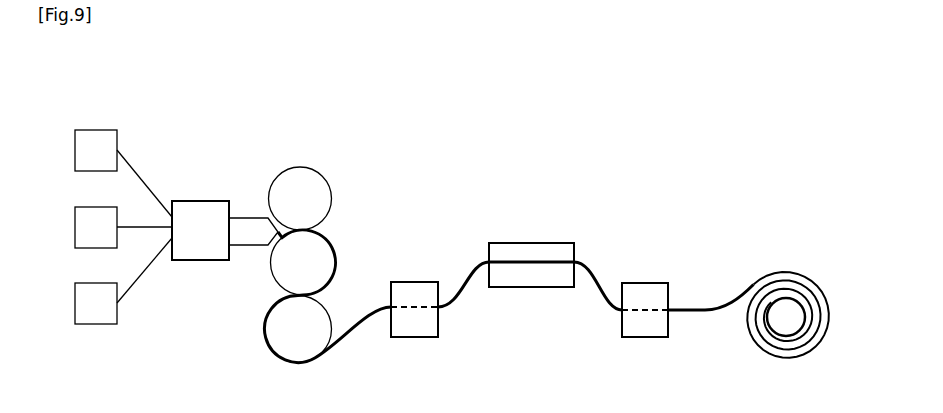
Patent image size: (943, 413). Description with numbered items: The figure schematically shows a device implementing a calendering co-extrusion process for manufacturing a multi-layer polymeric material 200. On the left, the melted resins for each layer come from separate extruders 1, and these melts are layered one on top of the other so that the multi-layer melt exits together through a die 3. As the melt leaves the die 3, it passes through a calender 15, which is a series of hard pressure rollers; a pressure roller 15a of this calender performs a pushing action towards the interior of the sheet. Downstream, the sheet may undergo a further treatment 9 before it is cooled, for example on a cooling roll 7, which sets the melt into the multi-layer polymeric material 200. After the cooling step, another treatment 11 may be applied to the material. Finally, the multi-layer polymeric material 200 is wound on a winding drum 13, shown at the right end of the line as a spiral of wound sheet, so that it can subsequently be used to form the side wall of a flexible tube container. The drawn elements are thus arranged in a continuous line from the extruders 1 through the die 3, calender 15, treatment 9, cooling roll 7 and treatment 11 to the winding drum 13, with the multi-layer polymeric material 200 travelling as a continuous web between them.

The extruders 1 is at (55, 345).
The die 3 is at (238, 214).
The calender 15 is at (318, 162).
The pressure roller 15a is at (325, 203).
The treatment step 9 is at (418, 288).
The cooling roll 7 is at (508, 252).
The treatment step 11 is at (642, 292).
The multi-layer polymeric material 200 is at (688, 308).
The winding drum 13 is at (797, 270).